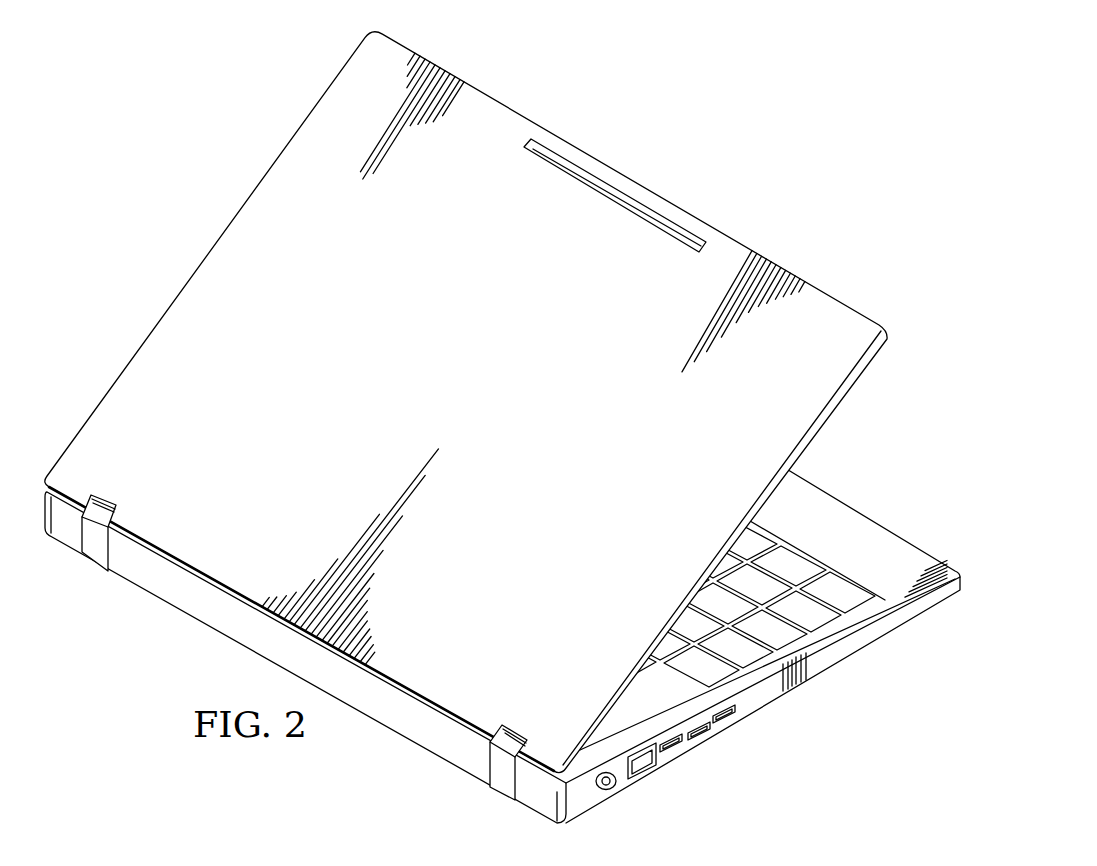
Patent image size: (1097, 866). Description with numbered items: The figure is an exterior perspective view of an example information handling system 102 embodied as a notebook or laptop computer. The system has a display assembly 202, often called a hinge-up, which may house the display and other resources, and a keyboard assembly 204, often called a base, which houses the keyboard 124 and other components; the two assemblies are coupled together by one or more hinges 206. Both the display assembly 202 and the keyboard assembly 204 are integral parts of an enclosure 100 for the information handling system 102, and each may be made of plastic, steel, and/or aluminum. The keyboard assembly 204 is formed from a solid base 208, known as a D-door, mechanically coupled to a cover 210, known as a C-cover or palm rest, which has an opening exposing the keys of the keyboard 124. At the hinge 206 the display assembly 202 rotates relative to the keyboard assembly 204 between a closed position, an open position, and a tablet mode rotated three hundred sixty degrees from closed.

The enclosure 100 is at (907, 540).
The information handling system 102 is at (466, 402).
The keyboard 124 is at (822, 560).
The display assembly 202 is at (500, 120).
The keyboard assembly 204 is at (760, 695).
The hinge 206 is at (507, 758).
The solid base 208 is at (857, 652).
The cover 210 is at (823, 510).